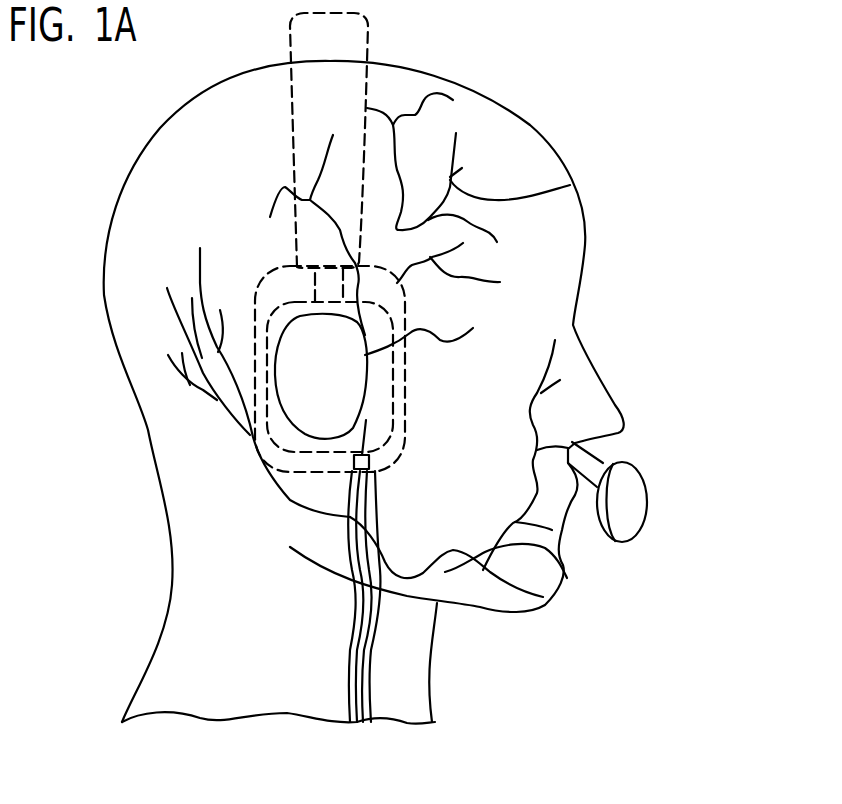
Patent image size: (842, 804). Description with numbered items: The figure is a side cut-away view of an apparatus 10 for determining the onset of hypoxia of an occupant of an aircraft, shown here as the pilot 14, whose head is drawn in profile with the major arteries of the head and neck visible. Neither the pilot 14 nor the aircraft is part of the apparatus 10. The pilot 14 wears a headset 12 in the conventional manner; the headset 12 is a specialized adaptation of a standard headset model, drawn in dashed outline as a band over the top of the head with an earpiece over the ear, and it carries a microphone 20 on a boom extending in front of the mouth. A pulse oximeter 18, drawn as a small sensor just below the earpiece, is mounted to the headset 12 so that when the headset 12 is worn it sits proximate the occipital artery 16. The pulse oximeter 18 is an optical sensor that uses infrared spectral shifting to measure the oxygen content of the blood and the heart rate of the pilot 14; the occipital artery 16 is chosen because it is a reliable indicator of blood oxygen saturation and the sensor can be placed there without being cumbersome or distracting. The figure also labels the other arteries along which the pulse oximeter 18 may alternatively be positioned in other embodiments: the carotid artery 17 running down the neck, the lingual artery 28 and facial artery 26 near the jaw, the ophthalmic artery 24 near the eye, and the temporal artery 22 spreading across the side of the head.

The apparatus 10 is at (638, 78).
The headset 12 is at (295, 264).
The pilot 14 is at (528, 125).
The occipital artery 16 is at (273, 487).
The carotid artery 17 is at (350, 654).
The pulse oximeter 18 is at (350, 463).
The microphone 20 is at (647, 500).
The temporal artery 22 is at (570, 185).
The ophthalmic artery 24 is at (430, 335).
The facial artery 26 is at (567, 578).
The lingual artery 28 is at (507, 580).